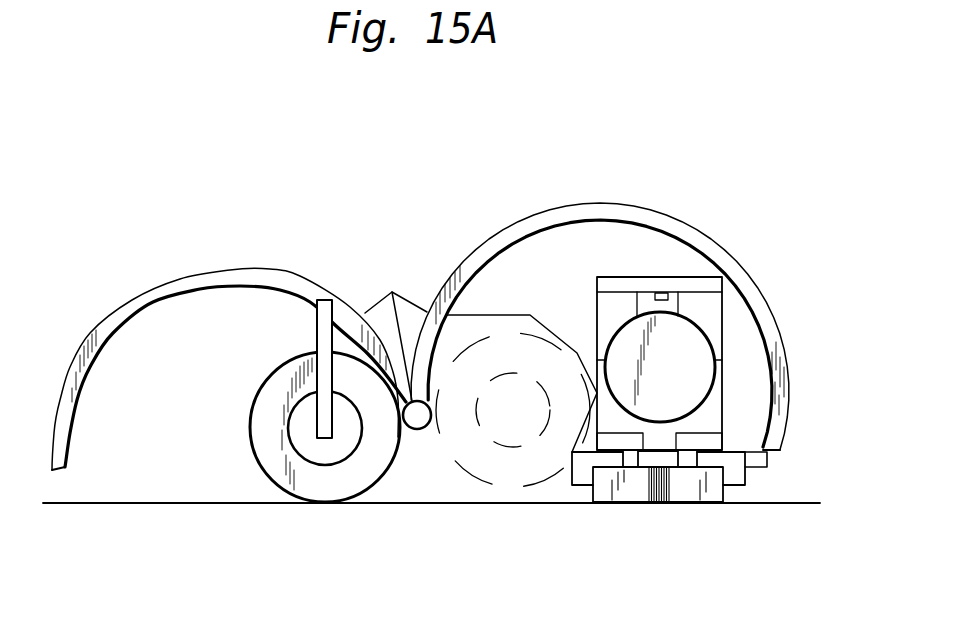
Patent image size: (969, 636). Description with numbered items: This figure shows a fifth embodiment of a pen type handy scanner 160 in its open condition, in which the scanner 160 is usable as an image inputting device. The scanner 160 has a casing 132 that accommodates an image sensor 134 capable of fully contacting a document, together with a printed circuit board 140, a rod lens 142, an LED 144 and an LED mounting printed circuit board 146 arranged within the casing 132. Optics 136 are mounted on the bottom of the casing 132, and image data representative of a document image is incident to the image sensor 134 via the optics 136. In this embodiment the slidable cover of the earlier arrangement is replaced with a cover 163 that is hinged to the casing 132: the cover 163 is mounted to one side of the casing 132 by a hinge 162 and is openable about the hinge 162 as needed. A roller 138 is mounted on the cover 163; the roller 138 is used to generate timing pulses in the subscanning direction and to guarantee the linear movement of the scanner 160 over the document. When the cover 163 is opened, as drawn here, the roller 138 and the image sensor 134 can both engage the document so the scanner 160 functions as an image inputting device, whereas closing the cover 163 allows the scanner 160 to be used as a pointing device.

The scanner 160 is at (566, 172).
The casing 132 is at (630, 205).
The LED mounting printed circuit board 146 is at (660, 282).
The LED 144 is at (683, 299).
The rod lens 142 is at (690, 353).
The printed circuit board 140 is at (697, 438).
The image sensor 134 is at (668, 457).
The optics 136 is at (715, 492).
The roller 138 is at (283, 380).
The hinge 162 is at (418, 413).
The cover 163 is at (95, 345).